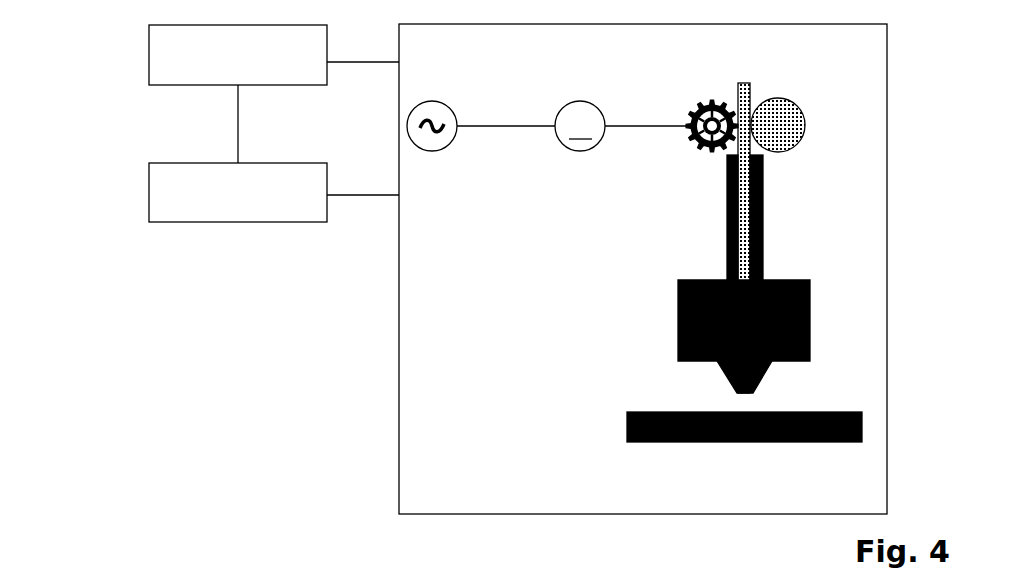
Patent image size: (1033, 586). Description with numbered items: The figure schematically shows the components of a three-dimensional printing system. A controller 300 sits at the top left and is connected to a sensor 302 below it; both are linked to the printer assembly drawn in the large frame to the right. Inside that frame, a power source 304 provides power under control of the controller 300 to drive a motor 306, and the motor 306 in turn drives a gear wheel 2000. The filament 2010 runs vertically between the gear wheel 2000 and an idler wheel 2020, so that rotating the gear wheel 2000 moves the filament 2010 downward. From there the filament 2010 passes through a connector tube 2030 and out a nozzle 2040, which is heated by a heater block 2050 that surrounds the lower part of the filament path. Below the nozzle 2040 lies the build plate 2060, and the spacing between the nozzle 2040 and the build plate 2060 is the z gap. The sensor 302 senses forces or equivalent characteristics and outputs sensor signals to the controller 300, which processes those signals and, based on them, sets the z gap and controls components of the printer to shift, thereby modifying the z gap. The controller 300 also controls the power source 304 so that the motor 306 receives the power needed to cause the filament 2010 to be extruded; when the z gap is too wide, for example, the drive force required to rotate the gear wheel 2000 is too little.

The controller 300 is at (149, 53).
The sensor 302 is at (149, 195).
The power source 304 is at (430, 151).
The motor 306 is at (582, 151).
The gear wheel 2000 is at (716, 150).
The filament 2010 is at (745, 88).
The idler wheel 2020 is at (790, 125).
The connector tube 2030 is at (728, 213).
The nozzle 2040 is at (733, 370).
The heater block 2050 is at (708, 303).
The build plate 2060 is at (742, 442).